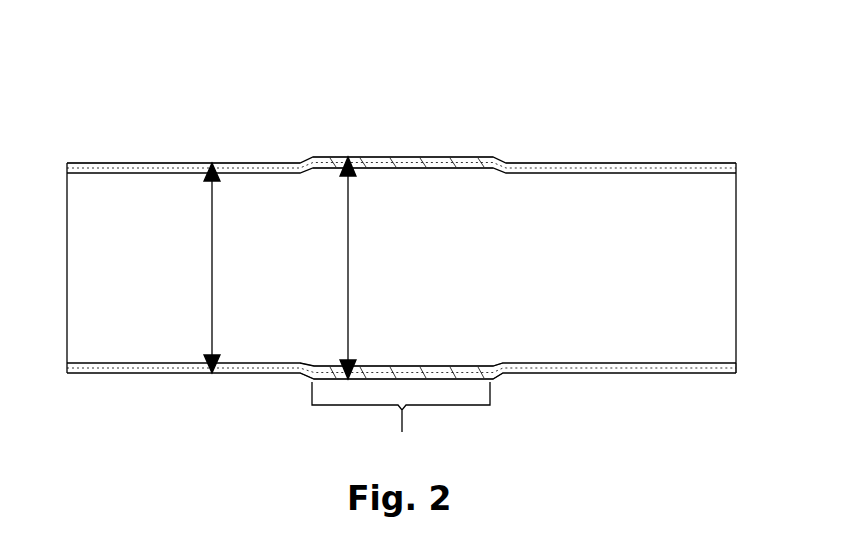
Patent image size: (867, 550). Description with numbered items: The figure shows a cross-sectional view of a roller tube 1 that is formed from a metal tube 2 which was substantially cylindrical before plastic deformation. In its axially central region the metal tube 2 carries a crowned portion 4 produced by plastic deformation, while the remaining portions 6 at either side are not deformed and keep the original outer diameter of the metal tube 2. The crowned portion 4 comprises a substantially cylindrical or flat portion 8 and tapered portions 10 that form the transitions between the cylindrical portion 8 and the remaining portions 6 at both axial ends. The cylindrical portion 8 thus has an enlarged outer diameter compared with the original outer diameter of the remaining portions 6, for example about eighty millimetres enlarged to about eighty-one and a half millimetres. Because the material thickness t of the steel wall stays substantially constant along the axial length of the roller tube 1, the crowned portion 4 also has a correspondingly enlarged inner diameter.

The roller tube 1 is at (420, 247).
The metal tube 2 is at (688, 170).
The crowned portion 4 is at (419, 153).
The remaining portions 6 is at (173, 157).
The cylindrical portion 8 is at (401, 425).
The tapered portions 10 is at (304, 371).
The material thickness t is at (736, 372).